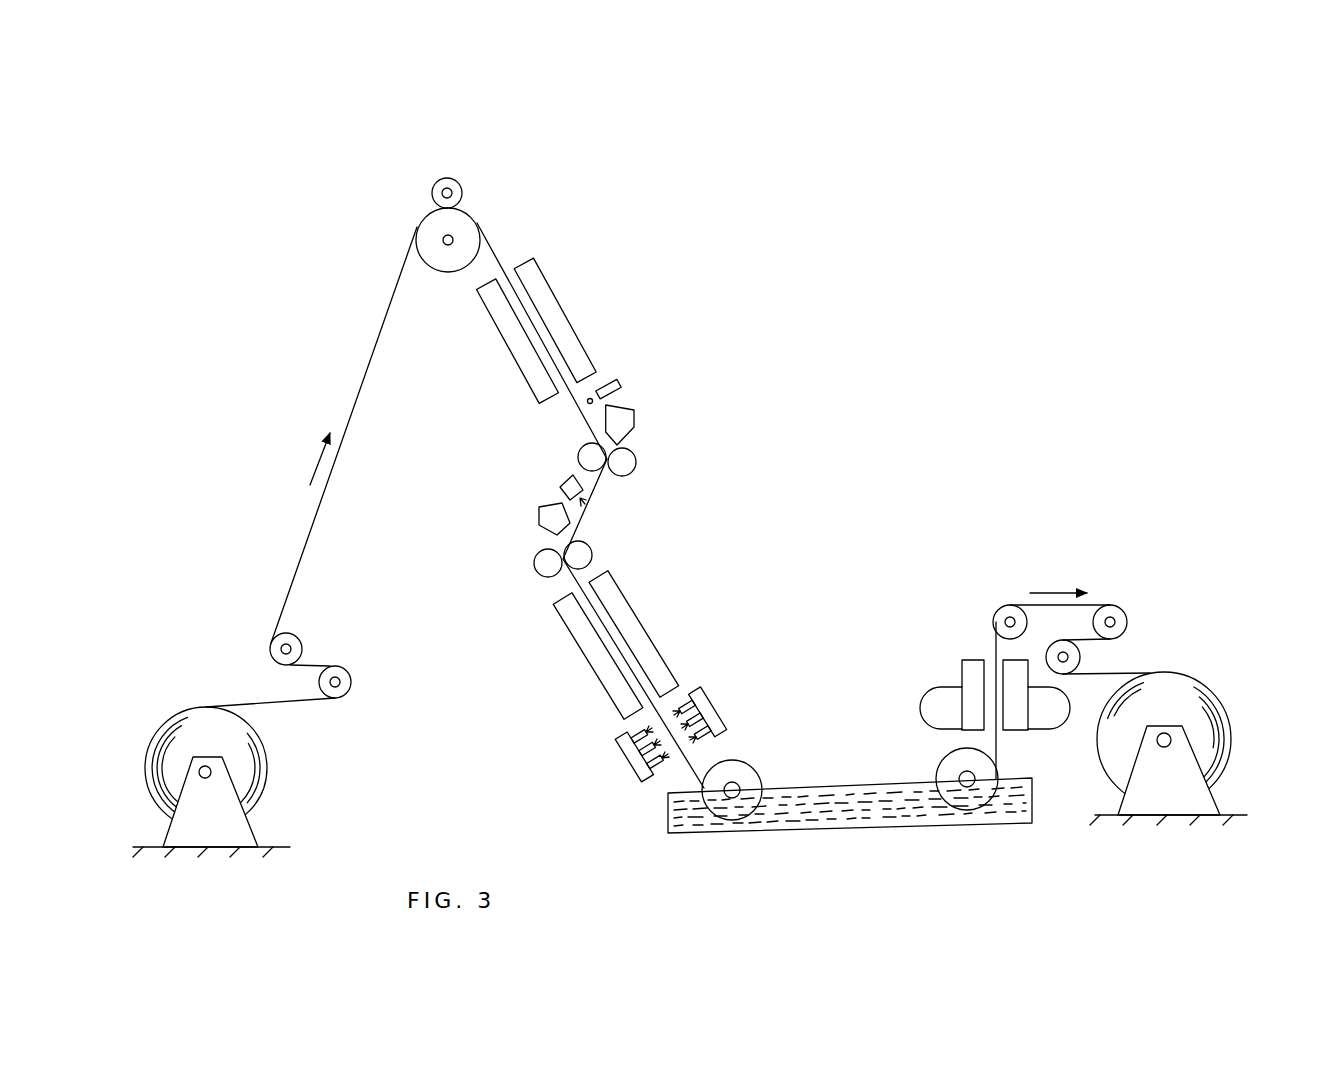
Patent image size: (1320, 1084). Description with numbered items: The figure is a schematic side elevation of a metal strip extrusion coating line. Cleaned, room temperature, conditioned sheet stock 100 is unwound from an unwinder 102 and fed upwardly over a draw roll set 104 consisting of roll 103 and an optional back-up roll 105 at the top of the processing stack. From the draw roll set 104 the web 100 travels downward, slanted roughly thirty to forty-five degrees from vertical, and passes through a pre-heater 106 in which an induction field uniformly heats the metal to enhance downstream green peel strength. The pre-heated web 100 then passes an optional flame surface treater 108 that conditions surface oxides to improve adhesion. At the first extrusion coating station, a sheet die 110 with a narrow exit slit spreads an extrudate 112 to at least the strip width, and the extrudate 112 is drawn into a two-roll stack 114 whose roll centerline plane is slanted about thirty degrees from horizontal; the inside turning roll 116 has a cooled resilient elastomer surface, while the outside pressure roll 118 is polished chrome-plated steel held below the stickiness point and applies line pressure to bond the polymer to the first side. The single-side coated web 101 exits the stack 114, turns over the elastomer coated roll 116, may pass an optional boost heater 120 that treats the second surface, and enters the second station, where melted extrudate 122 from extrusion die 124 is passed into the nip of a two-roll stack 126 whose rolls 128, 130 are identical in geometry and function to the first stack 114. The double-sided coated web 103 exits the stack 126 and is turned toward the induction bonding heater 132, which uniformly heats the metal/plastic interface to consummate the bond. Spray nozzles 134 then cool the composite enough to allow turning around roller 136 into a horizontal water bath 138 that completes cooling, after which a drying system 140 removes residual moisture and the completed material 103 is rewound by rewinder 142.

The sheet stock 100 is at (490, 247).
The single-side coated web 101 is at (582, 518).
The unwinder 102 is at (267, 779).
The roll 103 is at (459, 272).
The draw roll set 104 is at (476, 201).
The back-up roll 105 is at (436, 184).
The pre-heater 106 is at (561, 307).
The flame surface treater 108 is at (620, 383).
The sheet die 110 is at (630, 408).
The extrudate 112 is at (617, 447).
The roll stack 114 is at (614, 486).
The turning roll 116 is at (581, 450).
The pressure roll 118 is at (636, 462).
The boost heater 120 is at (558, 487).
The extrudate 122 is at (559, 548).
The extrusion die 124 is at (538, 514).
The two-roll stack 126 is at (543, 589).
The roll 128 is at (592, 555).
The roll 130 is at (537, 571).
The induction bonding heater 132 is at (593, 673).
The spray nozzles 134 is at (627, 734).
The roller 136 is at (747, 764).
The water bath 138 is at (834, 781).
The drying system 140 is at (959, 656).
The rewinder 142 is at (1212, 692).